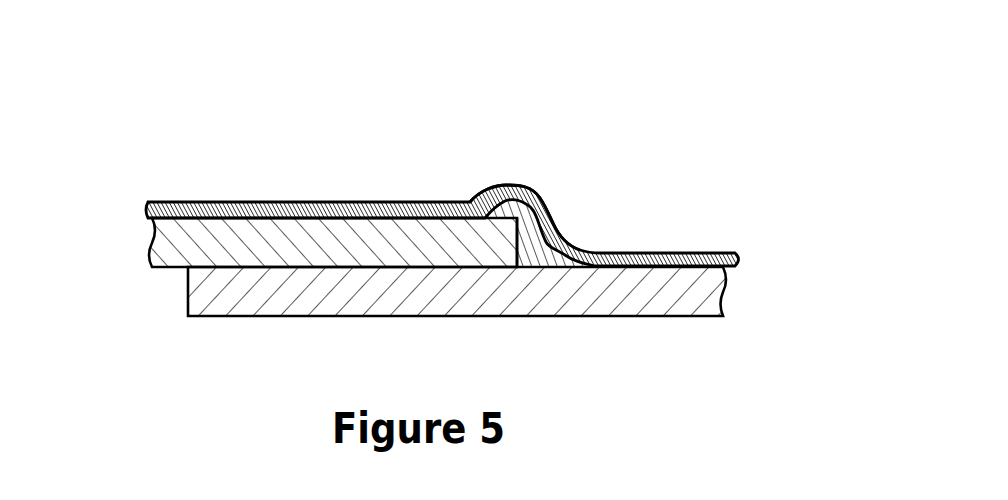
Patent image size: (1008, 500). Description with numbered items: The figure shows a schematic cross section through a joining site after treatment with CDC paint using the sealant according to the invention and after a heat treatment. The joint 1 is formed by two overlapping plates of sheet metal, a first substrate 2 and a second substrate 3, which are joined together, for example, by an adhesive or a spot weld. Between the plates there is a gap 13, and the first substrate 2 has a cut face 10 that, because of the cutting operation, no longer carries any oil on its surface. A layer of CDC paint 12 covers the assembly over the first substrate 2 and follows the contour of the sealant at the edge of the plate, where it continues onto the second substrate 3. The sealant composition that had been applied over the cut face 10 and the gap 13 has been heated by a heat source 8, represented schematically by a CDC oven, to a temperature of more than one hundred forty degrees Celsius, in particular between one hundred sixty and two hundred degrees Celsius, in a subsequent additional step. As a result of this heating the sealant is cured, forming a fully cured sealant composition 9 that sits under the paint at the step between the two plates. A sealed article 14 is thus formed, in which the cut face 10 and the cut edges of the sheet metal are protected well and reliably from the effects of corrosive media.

The joint 1 is at (149, 245).
The first substrate 2 is at (305, 262).
The second substrate 3 is at (350, 313).
The heat source 8 is at (520, 177).
The cured sealant composition 9 is at (528, 226).
The cut face 10 is at (556, 262).
The CDC paint 12 is at (362, 202).
The gap 13 is at (535, 243).
The sealed article 14 is at (733, 227).